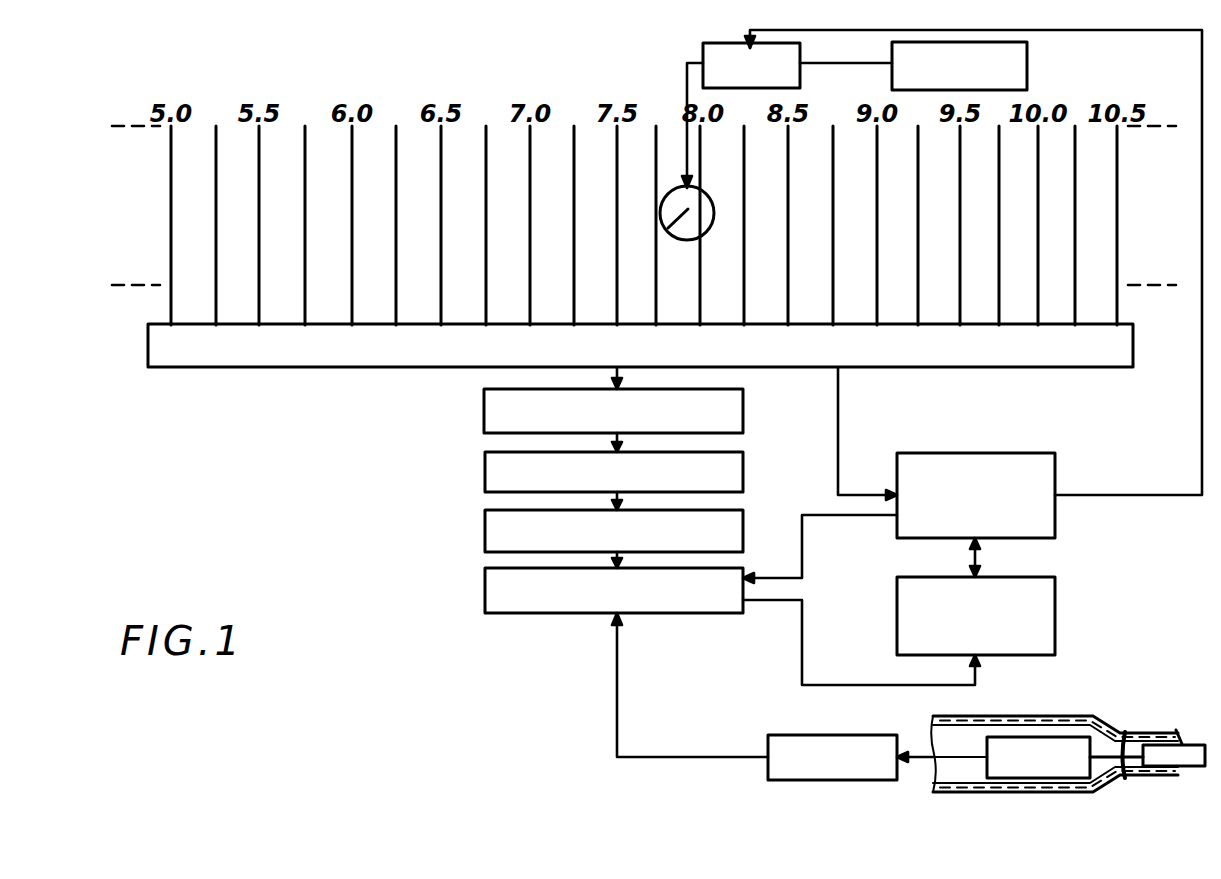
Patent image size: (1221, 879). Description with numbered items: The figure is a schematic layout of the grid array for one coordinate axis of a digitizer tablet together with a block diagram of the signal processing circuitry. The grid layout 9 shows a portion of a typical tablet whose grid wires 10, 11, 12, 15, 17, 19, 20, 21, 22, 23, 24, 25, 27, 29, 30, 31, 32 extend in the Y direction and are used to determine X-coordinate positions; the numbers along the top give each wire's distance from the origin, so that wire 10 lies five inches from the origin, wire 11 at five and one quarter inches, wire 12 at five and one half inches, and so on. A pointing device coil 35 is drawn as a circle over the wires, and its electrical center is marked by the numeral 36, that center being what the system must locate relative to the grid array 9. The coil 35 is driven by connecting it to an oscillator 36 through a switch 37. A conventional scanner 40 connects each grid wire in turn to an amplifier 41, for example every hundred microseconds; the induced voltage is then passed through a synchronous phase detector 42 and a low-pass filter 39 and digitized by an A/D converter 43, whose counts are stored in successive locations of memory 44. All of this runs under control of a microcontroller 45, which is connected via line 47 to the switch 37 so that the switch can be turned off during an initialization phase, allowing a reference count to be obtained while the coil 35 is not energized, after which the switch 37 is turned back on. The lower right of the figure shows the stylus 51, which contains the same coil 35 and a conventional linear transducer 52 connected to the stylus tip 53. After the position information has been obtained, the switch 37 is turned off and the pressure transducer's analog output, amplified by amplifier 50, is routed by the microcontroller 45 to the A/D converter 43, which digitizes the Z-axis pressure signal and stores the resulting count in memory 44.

The grid layout 9 is at (1130, 208).
The grid wire 10 is at (171, 254).
The grid wire 11 is at (216, 260).
The grid wire 12 is at (259, 260).
The grid wire 15 is at (396, 262).
The grid wire 17 is at (486, 265).
The grid wire 19 is at (574, 265).
The grid wire 20 is at (617, 267).
The grid wire 21 is at (656, 271).
The grid wire 22 is at (700, 281).
The grid wire 23 is at (744, 305).
The grid wire 24 is at (788, 300).
The grid wire 25 is at (833, 292).
The grid wire 27 is at (918, 286).
The grid wire 29 is at (999, 288).
The grid wire 30 is at (1038, 287).
The grid wire 31 is at (1075, 287).
The grid wire 32 is at (1117, 287).
The pointing device coil 35 is at (710, 226).
The oscillator 36 is at (1027, 63).
The switch 37 is at (703, 53).
The low-pass filter 39 is at (485, 531).
The scanner 40 is at (334, 370).
The amplifier 41 is at (484, 411).
The synchronous phase detector 42 is at (485, 475).
The A/D converter 43 is at (584, 590).
The memory 44 is at (1045, 640).
The microcontroller 45 is at (1036, 526).
The line 47 is at (1103, 497).
The amplifier 50 is at (800, 735).
The stylus 51 is at (1076, 708).
The linear transducer 52 is at (1038, 757).
The stylus tip 53 is at (1192, 768).